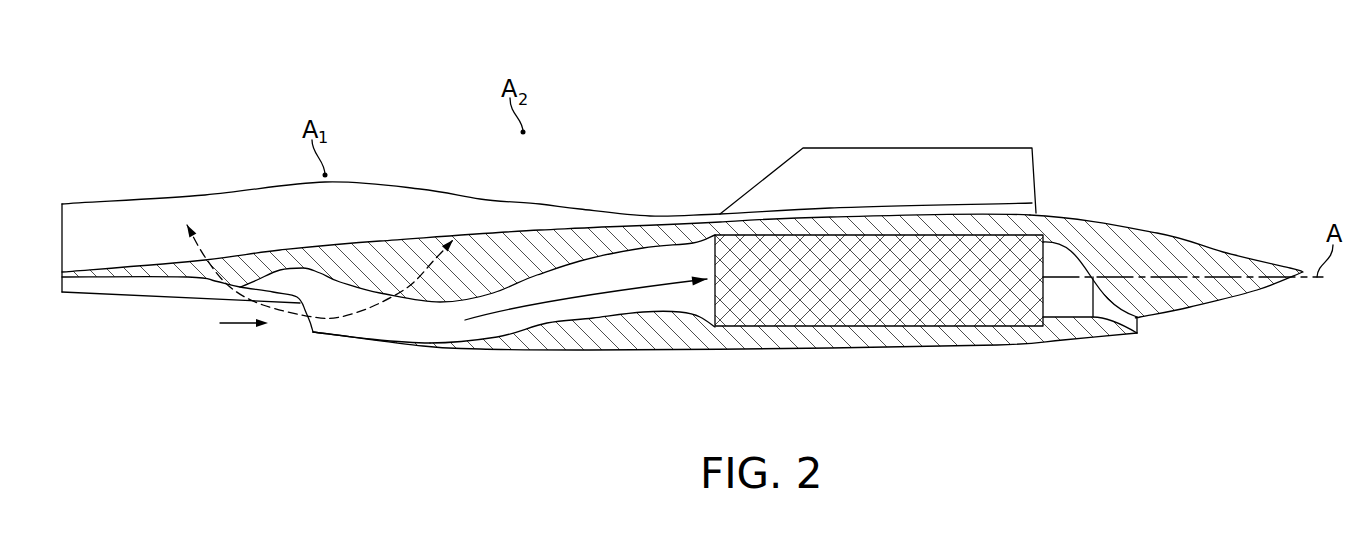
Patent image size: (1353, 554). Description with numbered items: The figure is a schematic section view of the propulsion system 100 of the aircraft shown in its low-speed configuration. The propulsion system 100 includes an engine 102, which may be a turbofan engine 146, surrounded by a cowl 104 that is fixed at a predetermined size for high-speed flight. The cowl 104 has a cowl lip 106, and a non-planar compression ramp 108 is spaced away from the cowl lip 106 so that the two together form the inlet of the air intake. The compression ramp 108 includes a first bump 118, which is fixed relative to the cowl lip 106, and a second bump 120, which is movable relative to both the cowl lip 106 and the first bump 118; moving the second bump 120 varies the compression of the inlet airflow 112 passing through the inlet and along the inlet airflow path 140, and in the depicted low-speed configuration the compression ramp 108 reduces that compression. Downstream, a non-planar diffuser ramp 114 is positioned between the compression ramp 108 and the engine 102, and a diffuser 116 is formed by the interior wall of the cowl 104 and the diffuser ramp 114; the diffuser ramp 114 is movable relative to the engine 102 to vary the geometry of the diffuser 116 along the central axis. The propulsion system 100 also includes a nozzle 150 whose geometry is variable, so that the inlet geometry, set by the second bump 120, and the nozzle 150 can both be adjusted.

The propulsion system 100 is at (1105, 110).
The engine 102 is at (945, 330).
The cowl 104 is at (483, 360).
The cowl lip 106 is at (310, 333).
The compression ramp 108 is at (342, 265).
The inlet airflow 112 is at (240, 323).
The diffuser ramp 114 is at (558, 262).
The diffuser 116 is at (655, 247).
The first bump 118 is at (207, 282).
The second bump 120 is at (385, 297).
The inlet airflow path 140 is at (565, 300).
The turbofan engine 146 is at (847, 328).
The nozzle 150 is at (1197, 242).